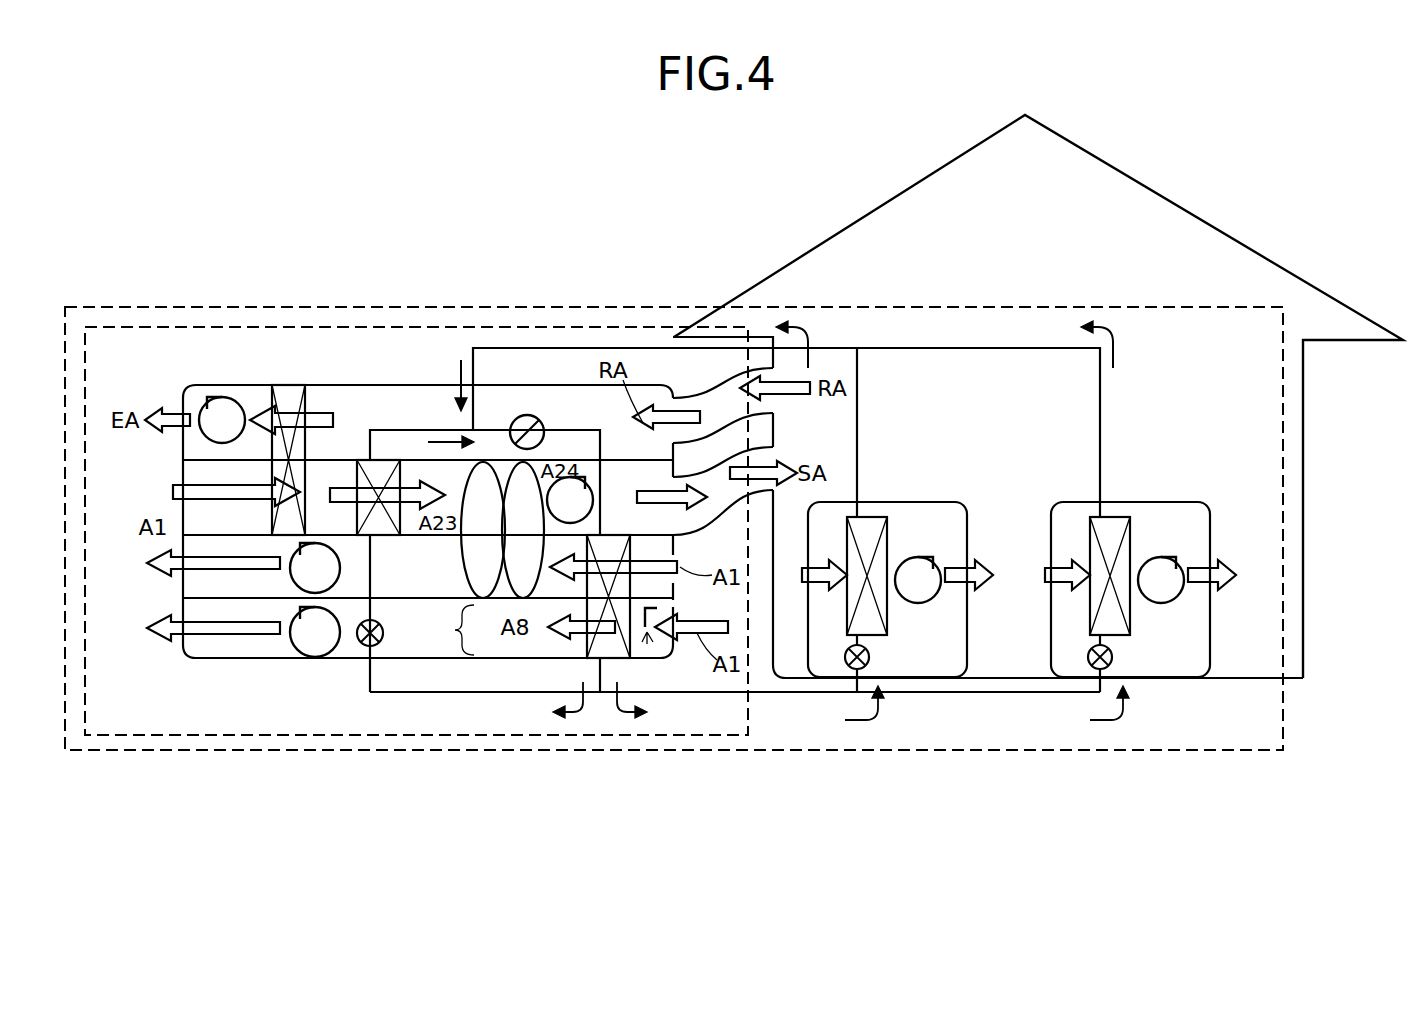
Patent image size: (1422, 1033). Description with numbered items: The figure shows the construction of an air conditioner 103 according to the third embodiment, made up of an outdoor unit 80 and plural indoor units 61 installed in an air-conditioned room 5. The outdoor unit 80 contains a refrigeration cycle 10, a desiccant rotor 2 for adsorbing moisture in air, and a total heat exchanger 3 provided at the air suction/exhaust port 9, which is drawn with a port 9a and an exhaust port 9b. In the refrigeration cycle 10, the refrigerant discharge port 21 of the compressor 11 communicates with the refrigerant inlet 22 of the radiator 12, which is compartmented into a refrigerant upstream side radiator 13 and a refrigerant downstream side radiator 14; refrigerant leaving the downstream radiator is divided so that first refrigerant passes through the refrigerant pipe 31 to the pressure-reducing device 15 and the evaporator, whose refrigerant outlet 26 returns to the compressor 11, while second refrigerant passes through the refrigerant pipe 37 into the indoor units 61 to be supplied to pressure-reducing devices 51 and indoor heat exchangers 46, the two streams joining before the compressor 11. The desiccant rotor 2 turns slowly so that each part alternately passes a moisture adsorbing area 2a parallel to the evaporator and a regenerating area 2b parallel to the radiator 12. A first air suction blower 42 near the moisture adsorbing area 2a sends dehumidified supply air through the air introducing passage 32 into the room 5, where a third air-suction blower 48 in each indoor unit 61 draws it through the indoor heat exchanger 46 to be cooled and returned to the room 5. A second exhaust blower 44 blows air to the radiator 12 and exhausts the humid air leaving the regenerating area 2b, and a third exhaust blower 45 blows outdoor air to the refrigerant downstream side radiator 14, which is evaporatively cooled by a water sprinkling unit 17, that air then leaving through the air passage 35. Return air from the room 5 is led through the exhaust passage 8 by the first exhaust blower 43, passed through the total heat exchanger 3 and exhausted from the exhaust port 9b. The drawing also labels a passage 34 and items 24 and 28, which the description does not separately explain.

The air conditioner 103 is at (350, 305).
The outdoor unit 80 is at (255, 735).
The air-conditioned room 5 is at (1012, 248).
The exhaust passage 8 is at (710, 398).
The air suction/exhaust port 9 is at (127, 430).
The upper casing portion 9a is at (178, 437).
The exhaust port 9b is at (178, 480).
The total heat exchanger 3 is at (293, 388).
The first exhaust blower 43 is at (235, 400).
The refrigeration cycle 10 is at (392, 430).
The refrigerant outlet of the evaporator 26 is at (370, 460).
The compressor 11 is at (527, 415).
The refrigerant discharge port 21 is at (540, 428).
The refrigerant pipe 31 is at (580, 432).
The desiccant rotor 2 is at (496, 530).
The moisture adsorbing area 2a is at (505, 478).
The regenerating area 2b is at (520, 575).
The first air suction blower 42 is at (590, 505).
The refrigerant inlet of the radiator 22 is at (600, 532).
The air introducing passage 32 is at (663, 595).
The water sprinkling unit 17 is at (675, 604).
The radiator 12 is at (450, 630).
The refrigerant upstream side radiator 13 is at (597, 587).
The refrigerant downstream side radiator 14 is at (605, 648).
The refrigerant pipe 28 is at (388, 613).
The second exhaust blower 44 is at (340, 578).
The third exhaust blower 45 is at (340, 640).
The pressure-reducing device 15 is at (382, 628).
The exhaust outlet 34 is at (205, 582).
The air passage 35 is at (213, 657).
The refrigerant pipe 24 is at (600, 660).
The refrigerant pipe 37 is at (790, 695).
The indoor unit 61 is at (968, 645).
The indoor heat exchanger 46 is at (865, 525).
The third air-suction blower 48 is at (920, 565).
The pressure-reducing device 51 is at (870, 657).